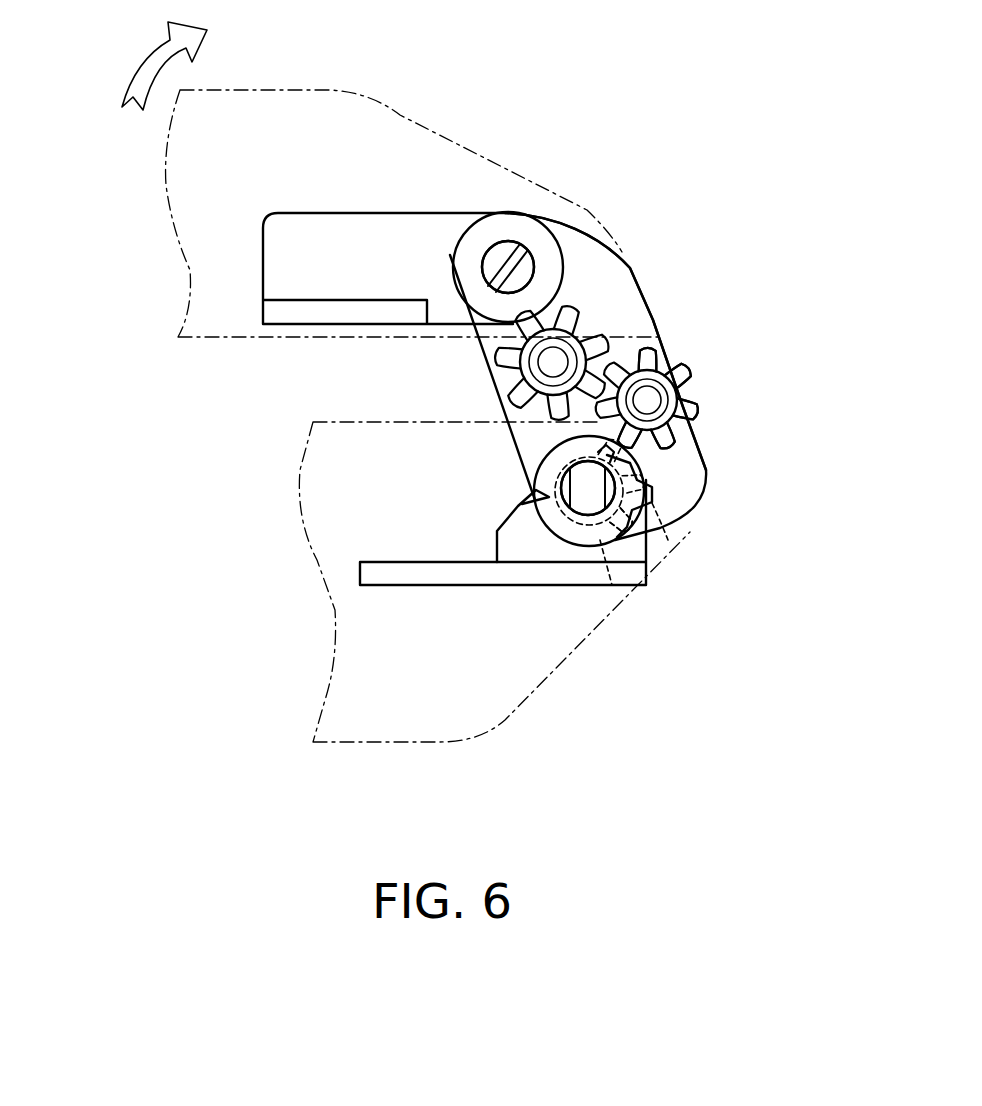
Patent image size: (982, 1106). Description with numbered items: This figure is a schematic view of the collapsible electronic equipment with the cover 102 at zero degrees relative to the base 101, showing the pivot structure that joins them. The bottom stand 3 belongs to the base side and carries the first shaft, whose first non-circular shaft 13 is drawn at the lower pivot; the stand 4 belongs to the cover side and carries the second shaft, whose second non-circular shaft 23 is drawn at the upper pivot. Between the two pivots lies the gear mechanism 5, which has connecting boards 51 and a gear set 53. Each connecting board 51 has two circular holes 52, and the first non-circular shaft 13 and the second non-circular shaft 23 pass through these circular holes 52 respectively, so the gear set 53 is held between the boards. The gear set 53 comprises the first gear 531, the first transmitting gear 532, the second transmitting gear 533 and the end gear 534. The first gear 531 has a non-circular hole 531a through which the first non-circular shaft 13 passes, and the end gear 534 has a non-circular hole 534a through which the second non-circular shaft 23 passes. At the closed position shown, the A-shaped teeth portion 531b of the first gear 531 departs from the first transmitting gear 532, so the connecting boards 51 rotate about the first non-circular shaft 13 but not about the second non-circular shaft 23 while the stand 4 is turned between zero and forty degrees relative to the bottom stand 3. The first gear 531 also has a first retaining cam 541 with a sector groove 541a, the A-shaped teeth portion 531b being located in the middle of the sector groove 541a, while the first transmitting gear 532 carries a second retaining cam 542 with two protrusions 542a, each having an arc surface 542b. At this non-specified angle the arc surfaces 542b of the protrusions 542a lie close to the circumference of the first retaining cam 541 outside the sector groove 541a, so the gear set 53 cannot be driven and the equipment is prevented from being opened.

The cover 102 is at (190, 165).
The base 101 is at (355, 705).
The stand 4 is at (313, 247).
The bottom stand 3 is at (400, 573).
The gear mechanism 5 is at (639, 237).
The connecting board 51 is at (627, 302).
The circular hole 52 is at (481, 272).
The gear set 53 is at (693, 338).
The first non-circular shaft 13 is at (588, 493).
The second non-circular shaft 23 is at (513, 260).
The first gear 531 is at (630, 586).
The non-circular hole 531a is at (560, 535).
The A-shaped teeth portion 531b is at (672, 514).
The first transmitting gear 532 is at (715, 369).
The second transmitting gear 533 is at (522, 365).
The end gear 534 is at (503, 230).
The non-circular hole 534a is at (483, 275).
The first retaining cam 541 is at (520, 507).
The sector groove 541a is at (665, 530).
The second retaining cam 542 is at (685, 410).
The protrusion 542a is at (675, 432).
The arc surface 542b is at (665, 468).